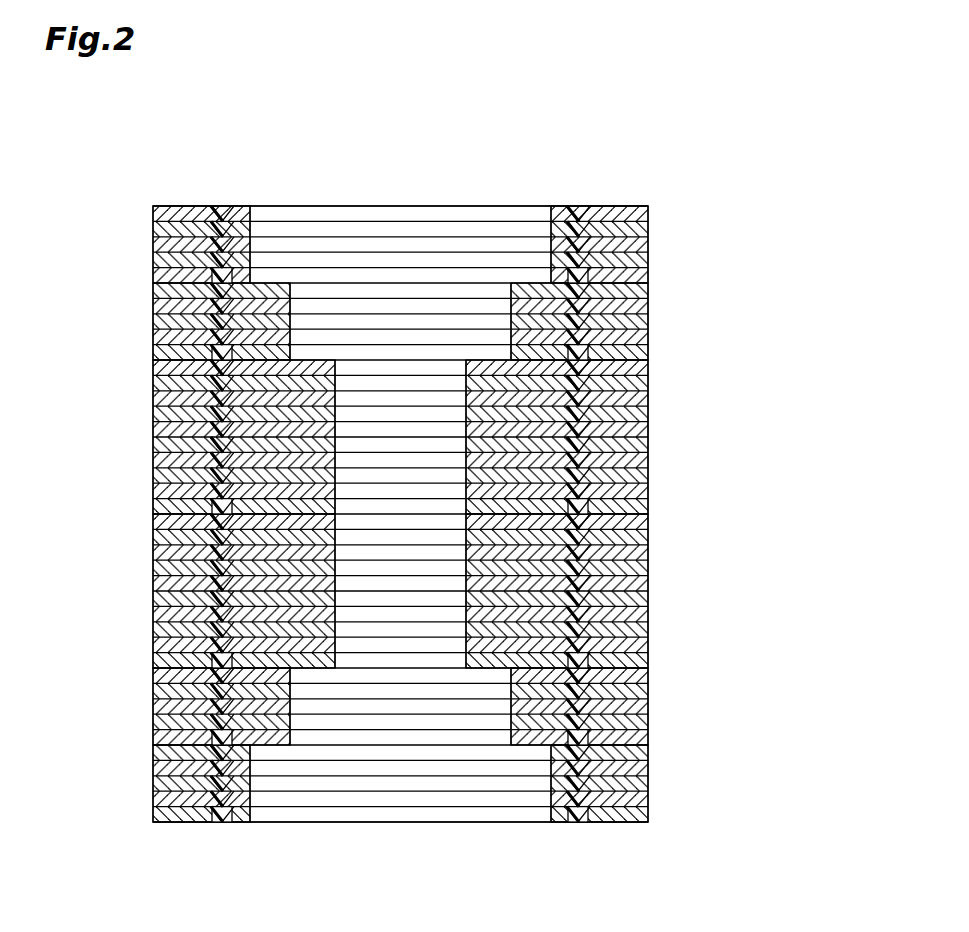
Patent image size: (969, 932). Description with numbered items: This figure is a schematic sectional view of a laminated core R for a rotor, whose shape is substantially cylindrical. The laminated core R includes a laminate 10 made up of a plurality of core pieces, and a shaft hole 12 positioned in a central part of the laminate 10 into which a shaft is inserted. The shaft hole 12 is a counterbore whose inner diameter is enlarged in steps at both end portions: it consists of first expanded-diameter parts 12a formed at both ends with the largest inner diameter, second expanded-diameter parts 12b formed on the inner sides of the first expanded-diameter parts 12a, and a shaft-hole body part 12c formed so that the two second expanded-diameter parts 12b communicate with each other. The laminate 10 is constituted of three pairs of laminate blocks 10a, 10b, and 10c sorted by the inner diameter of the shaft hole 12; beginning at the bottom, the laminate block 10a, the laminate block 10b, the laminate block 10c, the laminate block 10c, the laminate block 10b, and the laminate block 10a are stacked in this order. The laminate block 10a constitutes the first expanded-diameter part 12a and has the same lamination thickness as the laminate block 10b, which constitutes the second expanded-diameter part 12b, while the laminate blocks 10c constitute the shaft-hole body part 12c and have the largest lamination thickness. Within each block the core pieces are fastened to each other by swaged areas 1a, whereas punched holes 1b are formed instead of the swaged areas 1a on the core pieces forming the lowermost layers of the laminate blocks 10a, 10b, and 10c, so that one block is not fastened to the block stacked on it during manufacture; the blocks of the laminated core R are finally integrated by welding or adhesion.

The laminated core R is at (627, 136).
The laminate 10 is at (648, 520).
The laminate block 10a is at (153, 241).
The laminate block 10b is at (153, 316).
The laminate block 10c is at (153, 441).
The shaft hole 12 is at (462, 207).
The first expanded-diameter part 12a is at (250, 245).
The second expanded-diameter part 12b is at (290, 322).
The shaft-hole body part 12c is at (465, 592).
The swaged area 1a is at (228, 210).
The punched hole 1b is at (222, 275).